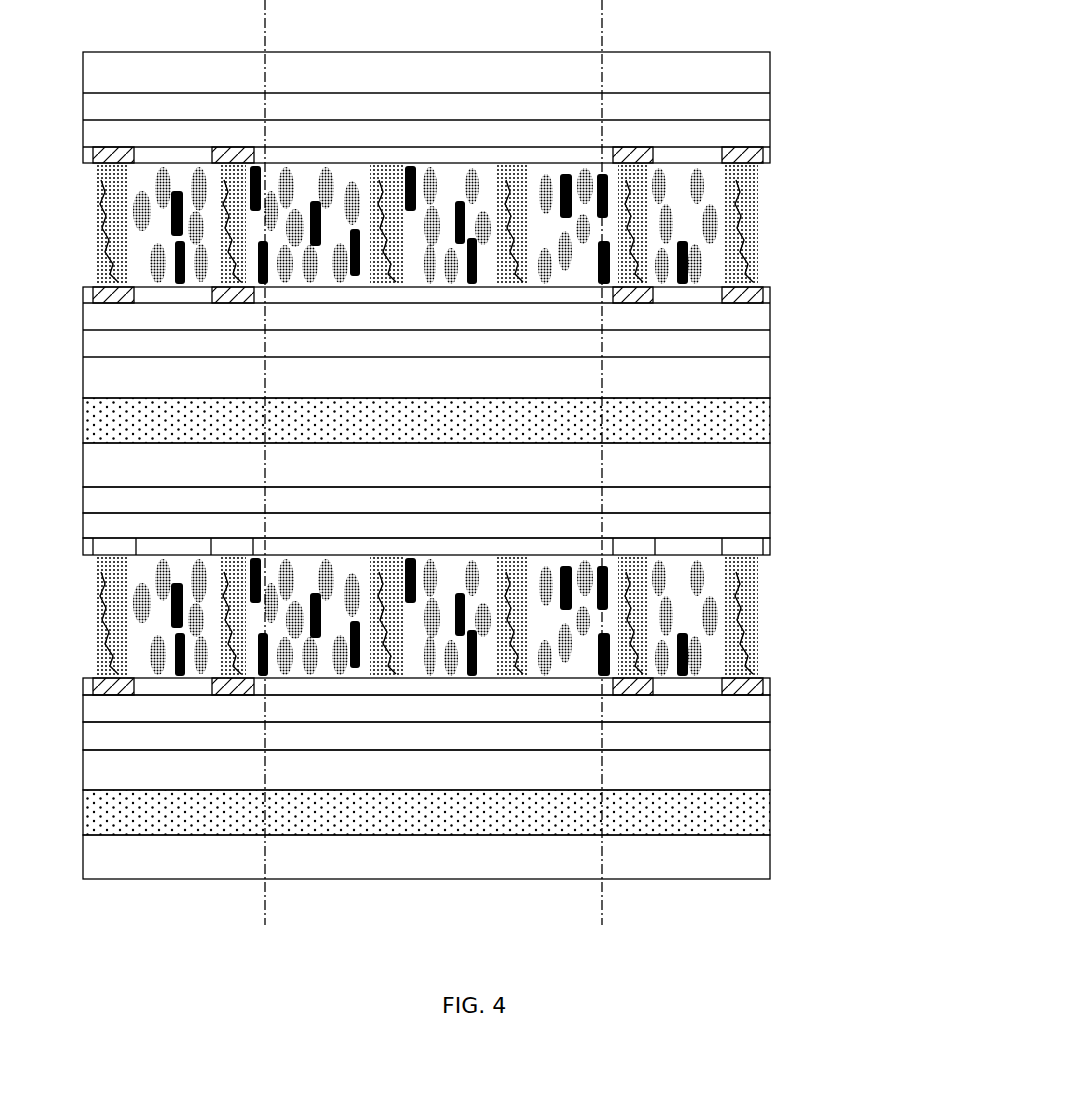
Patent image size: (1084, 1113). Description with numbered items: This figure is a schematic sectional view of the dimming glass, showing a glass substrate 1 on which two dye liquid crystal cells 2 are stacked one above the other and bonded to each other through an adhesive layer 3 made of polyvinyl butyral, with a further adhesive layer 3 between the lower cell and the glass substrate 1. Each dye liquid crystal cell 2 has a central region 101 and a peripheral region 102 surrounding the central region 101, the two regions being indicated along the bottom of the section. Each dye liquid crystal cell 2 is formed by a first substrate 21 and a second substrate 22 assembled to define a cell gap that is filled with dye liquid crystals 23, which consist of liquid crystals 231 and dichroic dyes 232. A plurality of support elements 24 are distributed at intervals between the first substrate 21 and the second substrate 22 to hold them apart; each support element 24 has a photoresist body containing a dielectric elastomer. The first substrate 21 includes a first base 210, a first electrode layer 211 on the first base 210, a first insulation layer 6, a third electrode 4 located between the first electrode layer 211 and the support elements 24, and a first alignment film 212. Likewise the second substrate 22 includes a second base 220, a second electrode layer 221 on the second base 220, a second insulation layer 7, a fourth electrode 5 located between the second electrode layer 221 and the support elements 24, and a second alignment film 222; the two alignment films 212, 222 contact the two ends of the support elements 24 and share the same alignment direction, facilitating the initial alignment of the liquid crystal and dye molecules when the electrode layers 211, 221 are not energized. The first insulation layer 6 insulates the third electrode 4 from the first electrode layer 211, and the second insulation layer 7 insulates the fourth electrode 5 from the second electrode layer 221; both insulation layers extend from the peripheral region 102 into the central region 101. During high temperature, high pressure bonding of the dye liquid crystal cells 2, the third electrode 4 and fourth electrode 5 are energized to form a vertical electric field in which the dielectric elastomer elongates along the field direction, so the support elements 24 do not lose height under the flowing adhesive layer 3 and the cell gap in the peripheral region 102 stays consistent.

The glass substrate 1 is at (748, 862).
The dye liquid crystal cell 2 is at (77, 52).
The adhesive layer 3 is at (758, 420).
The third electrode 4 is at (772, 694).
The fourth electrode 5 is at (770, 556).
The first insulation layer 6 is at (757, 708).
The second insulation layer 7 is at (767, 526).
The first substrate 21 is at (830, 667).
The second substrate 22 is at (835, 538).
The dye liquid crystals 23 is at (835, 640).
The support element 24 is at (737, 623).
The central region 101 is at (601, 904).
The peripheral region 102 is at (265, 895).
The first base 210 is at (757, 770).
The first electrode layer 211 is at (757, 735).
The first alignment film 212 is at (770, 683).
The second base 220 is at (765, 467).
The second electrode layer 221 is at (767, 500).
The second alignment film 222 is at (767, 546).
The liquid crystals 231 is at (695, 581).
The dichroic dyes 232 is at (687, 658).